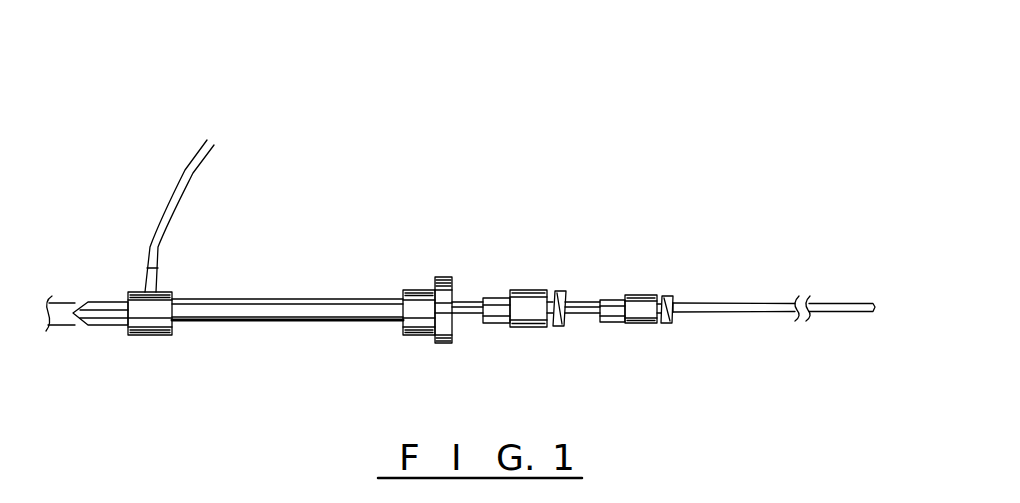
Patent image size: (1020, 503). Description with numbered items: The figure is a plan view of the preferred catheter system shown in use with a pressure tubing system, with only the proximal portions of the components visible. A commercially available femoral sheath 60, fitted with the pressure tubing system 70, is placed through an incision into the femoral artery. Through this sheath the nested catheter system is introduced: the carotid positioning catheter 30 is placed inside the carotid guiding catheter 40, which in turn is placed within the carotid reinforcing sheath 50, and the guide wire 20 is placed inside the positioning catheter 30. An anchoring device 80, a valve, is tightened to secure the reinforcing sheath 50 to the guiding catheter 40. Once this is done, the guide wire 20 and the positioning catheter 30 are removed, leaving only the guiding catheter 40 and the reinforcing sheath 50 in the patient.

The guide wire 20 is at (742, 312).
The carotid artery positioning catheter 30 is at (590, 302).
The carotid guiding catheter 40 is at (507, 323).
The carotid reinforcing sheath 50 is at (277, 300).
The femoral sheath 60 is at (105, 326).
The pressure tubing system 70 is at (187, 166).
The anchoring device 80 is at (420, 335).